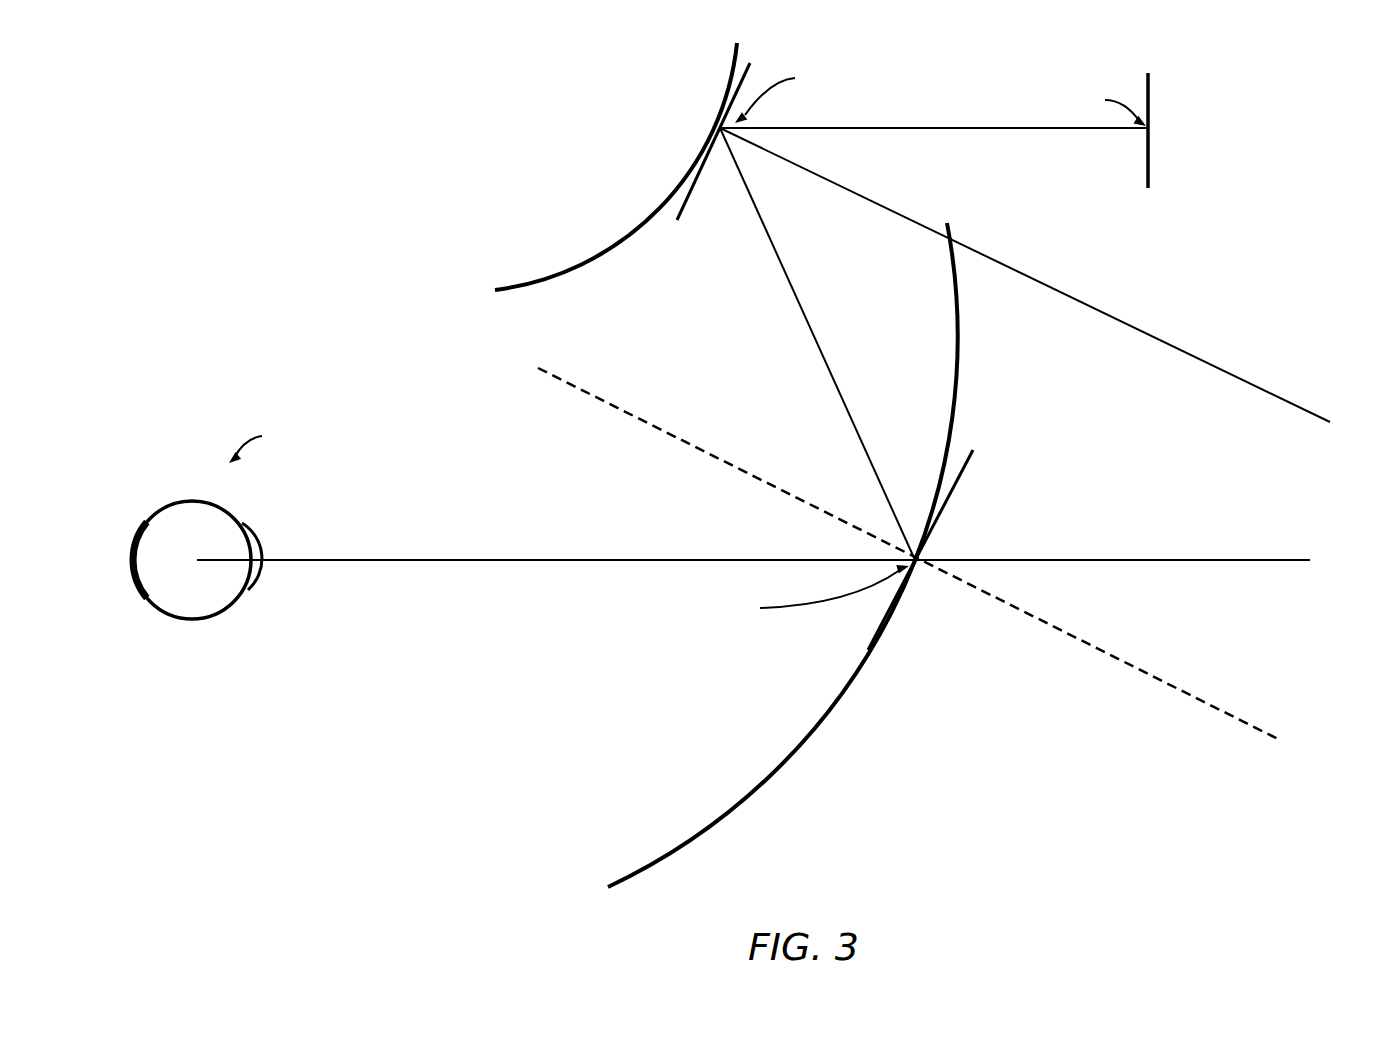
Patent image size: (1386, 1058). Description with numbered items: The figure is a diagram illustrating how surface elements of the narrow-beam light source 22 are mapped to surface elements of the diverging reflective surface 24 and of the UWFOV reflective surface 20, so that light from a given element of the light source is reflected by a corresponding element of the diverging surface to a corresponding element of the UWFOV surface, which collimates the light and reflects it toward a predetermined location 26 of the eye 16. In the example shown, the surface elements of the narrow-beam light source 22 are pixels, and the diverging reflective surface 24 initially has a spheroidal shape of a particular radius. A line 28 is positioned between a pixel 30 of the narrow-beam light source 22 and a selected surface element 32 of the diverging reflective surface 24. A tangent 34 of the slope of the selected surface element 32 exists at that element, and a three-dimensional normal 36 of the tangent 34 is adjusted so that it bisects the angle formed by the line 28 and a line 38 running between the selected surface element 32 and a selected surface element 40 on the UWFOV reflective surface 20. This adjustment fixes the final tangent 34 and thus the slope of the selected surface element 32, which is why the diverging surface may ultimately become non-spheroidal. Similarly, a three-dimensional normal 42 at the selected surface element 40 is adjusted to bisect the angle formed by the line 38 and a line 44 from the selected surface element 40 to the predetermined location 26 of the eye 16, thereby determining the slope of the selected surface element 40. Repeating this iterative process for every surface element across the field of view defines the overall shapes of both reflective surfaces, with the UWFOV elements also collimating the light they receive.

The eye 16 is at (172, 545).
The UWFOV reflective surface 20 is at (713, 800).
The narrow-beam light source 22 is at (1151, 157).
The diverging reflective surface 24 is at (732, 70).
The predetermined location 26 is at (258, 441).
The line 28 is at (1013, 130).
The pixel 30 is at (1113, 104).
The selected surface element 32 is at (771, 88).
The tangent 34 is at (688, 205).
The 3D normal 36 is at (862, 200).
The line 38 is at (818, 347).
The selected surface element 40 is at (852, 550).
The 3D normal 42 is at (668, 435).
The line 44 is at (351, 557).